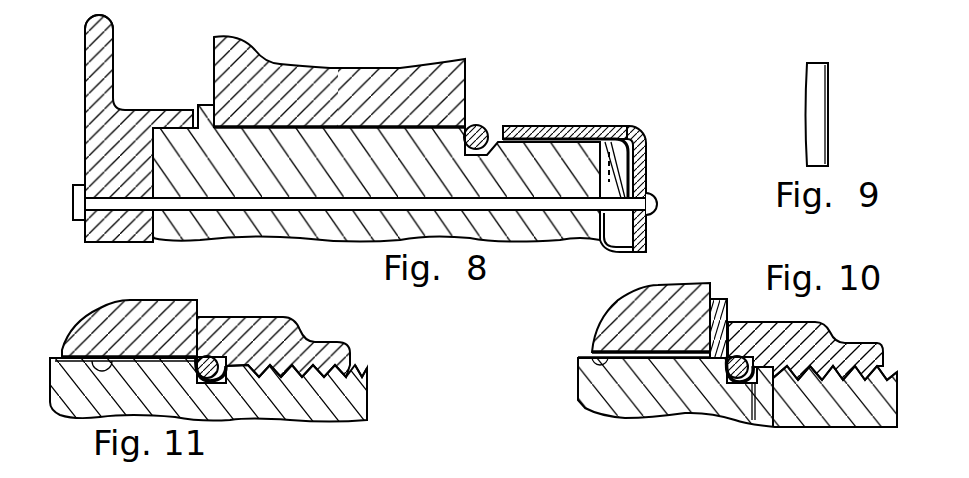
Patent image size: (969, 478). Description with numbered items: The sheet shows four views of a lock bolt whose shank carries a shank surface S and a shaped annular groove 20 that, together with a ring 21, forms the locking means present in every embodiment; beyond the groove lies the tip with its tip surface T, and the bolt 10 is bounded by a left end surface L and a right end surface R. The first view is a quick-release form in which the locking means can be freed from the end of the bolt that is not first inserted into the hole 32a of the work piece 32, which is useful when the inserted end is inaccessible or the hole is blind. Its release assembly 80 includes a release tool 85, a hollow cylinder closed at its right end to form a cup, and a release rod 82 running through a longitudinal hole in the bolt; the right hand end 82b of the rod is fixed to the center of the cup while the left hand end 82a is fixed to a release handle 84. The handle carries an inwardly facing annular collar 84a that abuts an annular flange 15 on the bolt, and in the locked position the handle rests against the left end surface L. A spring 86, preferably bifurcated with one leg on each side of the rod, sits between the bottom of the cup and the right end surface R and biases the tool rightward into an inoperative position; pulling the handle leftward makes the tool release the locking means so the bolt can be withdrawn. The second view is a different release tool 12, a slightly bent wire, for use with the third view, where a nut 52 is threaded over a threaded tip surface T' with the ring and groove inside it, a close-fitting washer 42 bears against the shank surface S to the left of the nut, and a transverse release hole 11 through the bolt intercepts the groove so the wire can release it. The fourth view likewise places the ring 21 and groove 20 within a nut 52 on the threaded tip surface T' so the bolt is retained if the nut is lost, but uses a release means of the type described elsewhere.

In FIG. 8, the bolt 10 is at (243, 238).
In FIG. 11, the bolt 10 is at (298, 419).
In FIG. 10, the bolt 10 is at (583, 390).
In FIG. 10, the transverse release hole 11 is at (770, 398).
In FIG. 9, the release tool 12 is at (810, 78).
In FIG. 8, the annular flange 15 is at (205, 104).
In FIG. 8, the annular groove 20 is at (492, 140).
In FIG. 11, the annular groove 20 is at (228, 366).
In FIG. 10, the annular groove 20 is at (748, 364).
In FIG. 8, the ring 21 is at (474, 124).
In FIG. 11, the ring 21 is at (199, 353).
In FIG. 10, the ring 21 is at (750, 357).
In FIG. 8, the work piece 32 is at (278, 64).
In FIG. 11, the work piece 32 is at (90, 317).
In FIG. 10, the work piece 32 is at (620, 312).
In FIG. 8, the hole 32a is at (393, 122).
In FIG. 11, the hole 32a is at (83, 353).
In FIG. 10, the hole 32a is at (580, 360).
In FIG. 10, the washer 42 is at (720, 298).
In FIG. 11, the nut 52 is at (330, 342).
In FIG. 10, the nut 52 is at (840, 343).
In FIG. 8, the release assembly 80 is at (80, 48).
In FIG. 8, the release rod 82 is at (308, 211).
In FIG. 8, the left hand end of the rod 82a is at (78, 186).
In FIG. 8, the right hand end of the rod 82b is at (658, 204).
In FIG. 8, the release handle 84 is at (85, 105).
In FIG. 8, the annular collar 84a is at (176, 112).
In FIG. 8, the release tool 85 is at (644, 134).
In FIG. 8, the spring 86 is at (623, 186).
In FIG. 8, the shank surface S is at (196, 112).
In FIG. 11, the shank surface S is at (53, 357).
In FIG. 10, the shank surface S is at (580, 355).
In FIG. 8, the tip surface T is at (569, 147).
In FIG. 11, the threaded tip surface T' is at (372, 356).
In FIG. 10, the threaded tip surface T' is at (892, 351).
In FIG. 8, the left end surface L is at (150, 224).
In FIG. 8, the right end surface R is at (605, 247).